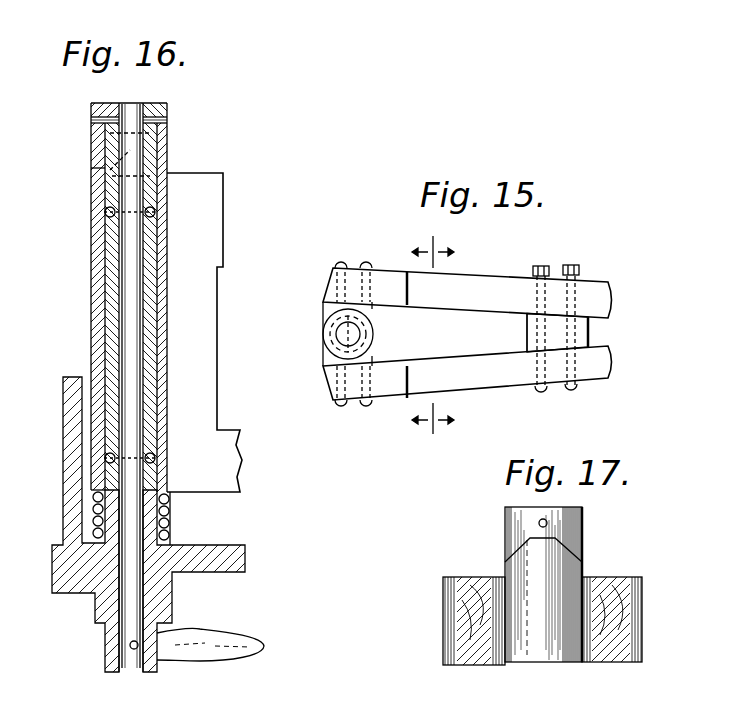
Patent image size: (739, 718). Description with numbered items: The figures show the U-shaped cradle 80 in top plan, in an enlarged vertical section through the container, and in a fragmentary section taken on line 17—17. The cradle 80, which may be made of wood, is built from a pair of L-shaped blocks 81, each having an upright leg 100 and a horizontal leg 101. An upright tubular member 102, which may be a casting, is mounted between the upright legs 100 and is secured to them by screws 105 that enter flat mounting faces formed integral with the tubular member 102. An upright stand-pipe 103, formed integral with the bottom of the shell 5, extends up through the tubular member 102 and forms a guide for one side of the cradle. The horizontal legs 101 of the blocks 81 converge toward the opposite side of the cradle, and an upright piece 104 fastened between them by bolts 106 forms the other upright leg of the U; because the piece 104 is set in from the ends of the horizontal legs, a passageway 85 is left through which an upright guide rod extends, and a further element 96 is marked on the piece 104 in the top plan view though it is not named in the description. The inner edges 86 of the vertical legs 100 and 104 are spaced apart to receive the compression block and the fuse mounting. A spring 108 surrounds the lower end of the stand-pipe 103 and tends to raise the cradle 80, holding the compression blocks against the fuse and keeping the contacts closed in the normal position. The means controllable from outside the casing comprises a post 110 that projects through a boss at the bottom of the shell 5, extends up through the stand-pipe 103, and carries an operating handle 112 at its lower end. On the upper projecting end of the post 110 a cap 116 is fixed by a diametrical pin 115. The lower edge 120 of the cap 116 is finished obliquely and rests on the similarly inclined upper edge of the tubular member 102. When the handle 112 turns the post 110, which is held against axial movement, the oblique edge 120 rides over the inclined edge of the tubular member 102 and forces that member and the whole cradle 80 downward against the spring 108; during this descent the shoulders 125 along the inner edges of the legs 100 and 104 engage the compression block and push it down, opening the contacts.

In FIG. 16, the shell 5 is at (64, 432).
In FIG. 15, the section line 17— 17 is at (433, 336).
In FIG. 15, the U-shaped cradle 80 is at (613, 284).
In FIG. 16, the L-shaped blocks 81 is at (232, 218).
In FIG. 15, the L-shaped blocks 81 is at (504, 273).
In FIG. 15, the passageway 85 is at (592, 333).
In FIG. 15, the inner edges 86 is at (409, 300).
In FIG. 15, the plate 96 is at (527, 345).
In FIG. 16, the upright legs 100 is at (190, 181).
In FIG. 15, the upright legs 100 is at (378, 281).
In FIG. 17, the upright legs 100 is at (462, 600).
In FIG. 16, the horizontal legs 101 is at (240, 476).
In FIG. 15, the horizontal legs 101 is at (462, 281).
In FIG. 16, the tubular member 102 is at (93, 348).
In FIG. 15, the tubular member 102 is at (330, 325).
In FIG. 17, the tubular member 102 is at (587, 578).
In FIG. 16, the stand-pipe 103 is at (101, 283).
In FIG. 15, the upright piece 104 is at (527, 323).
In FIG. 16, the screws 105 is at (105, 212).
In FIG. 15, the screws 105 is at (365, 265).
In FIG. 15, the bolts 106 is at (573, 393).
In FIG. 16, the spring 108 is at (172, 521).
In FIG. 16, the post 110 is at (122, 316).
In FIG. 15, the post 110 is at (340, 343).
In FIG. 16, the operating handle 112 is at (212, 641).
In FIG. 16, the diametrical pin 115 is at (168, 120).
In FIG. 15, the diametrical pin 115 is at (362, 336).
In FIG. 17, the diametrical pin 115 is at (548, 523).
In FIG. 16, the cap 116 is at (96, 103).
In FIG. 15, the cap 116 is at (372, 304).
In FIG. 17, the cap 116 is at (583, 513).
In FIG. 16, the oblique lower edge 120 is at (100, 168).
In FIG. 17, the oblique lower edge 120 is at (512, 541).
In FIG. 16, the shoulders 125 is at (222, 268).